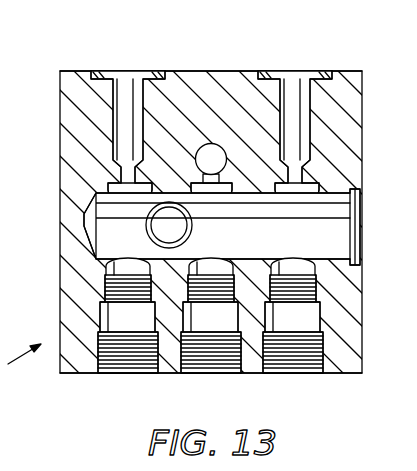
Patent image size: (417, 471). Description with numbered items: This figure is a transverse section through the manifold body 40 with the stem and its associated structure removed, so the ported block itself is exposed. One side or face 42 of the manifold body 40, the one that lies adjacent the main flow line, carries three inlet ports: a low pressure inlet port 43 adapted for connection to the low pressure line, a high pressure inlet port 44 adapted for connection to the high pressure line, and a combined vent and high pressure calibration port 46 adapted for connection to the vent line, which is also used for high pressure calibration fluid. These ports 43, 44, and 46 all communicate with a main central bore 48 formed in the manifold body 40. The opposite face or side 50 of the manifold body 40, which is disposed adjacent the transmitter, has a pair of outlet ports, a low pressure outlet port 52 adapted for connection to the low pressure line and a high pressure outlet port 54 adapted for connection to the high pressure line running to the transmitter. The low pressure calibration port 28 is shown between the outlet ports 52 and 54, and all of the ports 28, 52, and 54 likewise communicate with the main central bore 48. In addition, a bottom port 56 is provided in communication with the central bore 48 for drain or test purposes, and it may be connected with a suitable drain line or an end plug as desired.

The low pressure calibration port 28 is at (210, 150).
The manifold body 40 is at (237, 96).
The side or face 42 is at (72, 373).
The low pressure inlet port 43 is at (138, 358).
The high pressure inlet port 44 is at (300, 360).
The combined vent and high pressure calibration port 46 is at (217, 358).
The main central bore 48 is at (265, 248).
The opposite face or side 50 is at (193, 71).
The low pressure outlet port 52 is at (143, 88).
The high pressure outlet port 54 is at (305, 88).
The bottom port 56 is at (160, 231).